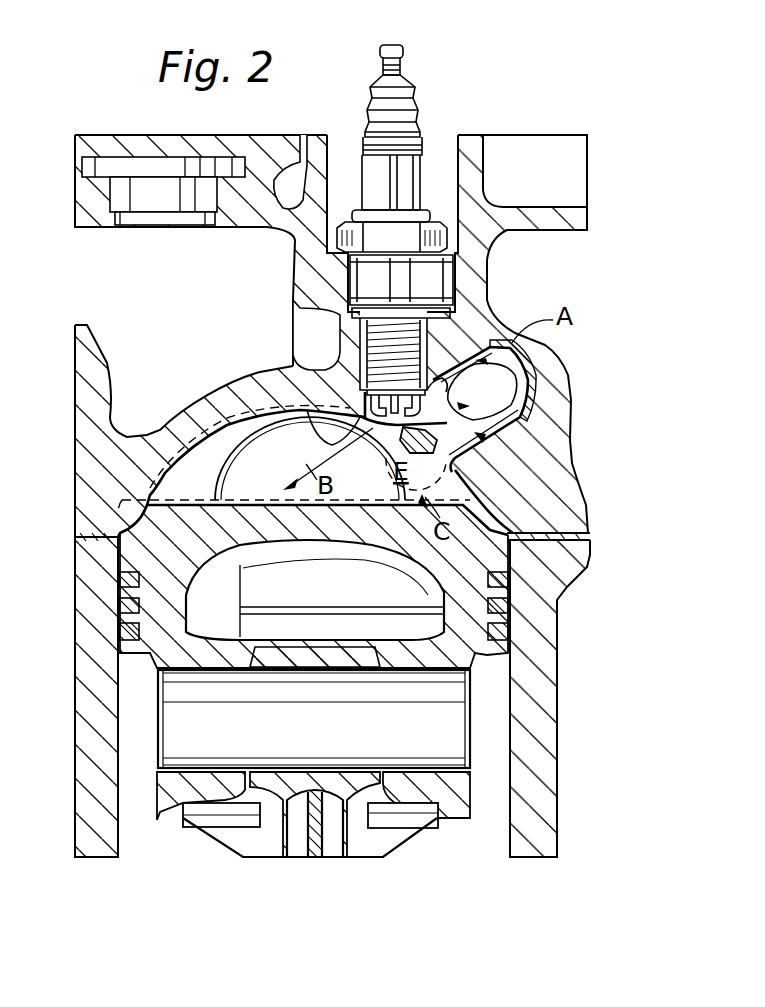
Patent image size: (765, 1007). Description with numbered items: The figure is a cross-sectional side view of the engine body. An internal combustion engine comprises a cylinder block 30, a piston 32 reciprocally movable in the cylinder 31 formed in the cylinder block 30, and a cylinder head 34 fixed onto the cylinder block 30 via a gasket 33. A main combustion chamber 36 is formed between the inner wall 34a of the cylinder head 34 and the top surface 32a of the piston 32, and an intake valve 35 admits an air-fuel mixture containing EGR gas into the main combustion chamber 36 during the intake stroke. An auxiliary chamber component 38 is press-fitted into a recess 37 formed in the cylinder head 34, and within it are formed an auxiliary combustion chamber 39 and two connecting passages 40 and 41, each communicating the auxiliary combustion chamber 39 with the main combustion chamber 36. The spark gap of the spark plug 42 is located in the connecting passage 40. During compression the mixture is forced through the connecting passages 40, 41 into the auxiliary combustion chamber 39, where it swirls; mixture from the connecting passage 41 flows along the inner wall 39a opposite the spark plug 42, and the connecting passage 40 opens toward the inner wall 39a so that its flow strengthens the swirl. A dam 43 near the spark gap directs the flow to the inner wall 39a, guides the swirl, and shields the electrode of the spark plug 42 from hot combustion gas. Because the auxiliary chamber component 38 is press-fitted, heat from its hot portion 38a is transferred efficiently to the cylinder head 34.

The cylinder block 30 is at (553, 718).
The cylinder 31 is at (510, 790).
The piston 32 is at (478, 612).
The top surface of the piston 32a is at (188, 495).
The gasket 33 is at (590, 536).
The cylinder head 34 is at (231, 395).
The inner wall of the cylinder head 34a is at (190, 455).
The intake valve 35 is at (280, 440).
The main combustion chamber 36 is at (310, 458).
The recess 37 is at (447, 373).
The auxiliary chamber component 38 is at (490, 428).
The portion of the auxiliary chamber component 38a is at (400, 505).
The auxiliary combustion chamber 39 is at (482, 400).
The inner wall of the auxiliary combustion chamber 39a is at (515, 452).
The connecting passage 40 is at (307, 440).
The connecting passage 41 is at (450, 447).
The spark plug 42 is at (388, 133).
The dam 43 is at (438, 378).